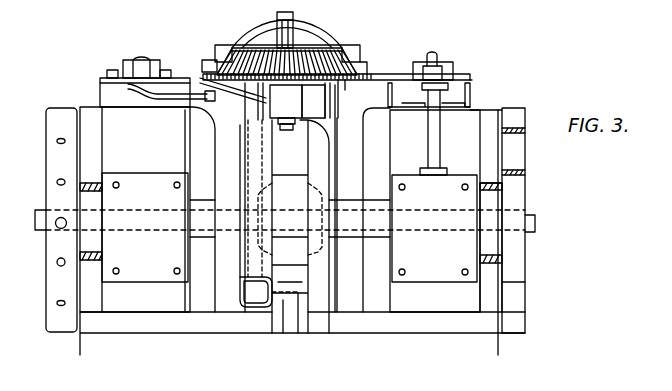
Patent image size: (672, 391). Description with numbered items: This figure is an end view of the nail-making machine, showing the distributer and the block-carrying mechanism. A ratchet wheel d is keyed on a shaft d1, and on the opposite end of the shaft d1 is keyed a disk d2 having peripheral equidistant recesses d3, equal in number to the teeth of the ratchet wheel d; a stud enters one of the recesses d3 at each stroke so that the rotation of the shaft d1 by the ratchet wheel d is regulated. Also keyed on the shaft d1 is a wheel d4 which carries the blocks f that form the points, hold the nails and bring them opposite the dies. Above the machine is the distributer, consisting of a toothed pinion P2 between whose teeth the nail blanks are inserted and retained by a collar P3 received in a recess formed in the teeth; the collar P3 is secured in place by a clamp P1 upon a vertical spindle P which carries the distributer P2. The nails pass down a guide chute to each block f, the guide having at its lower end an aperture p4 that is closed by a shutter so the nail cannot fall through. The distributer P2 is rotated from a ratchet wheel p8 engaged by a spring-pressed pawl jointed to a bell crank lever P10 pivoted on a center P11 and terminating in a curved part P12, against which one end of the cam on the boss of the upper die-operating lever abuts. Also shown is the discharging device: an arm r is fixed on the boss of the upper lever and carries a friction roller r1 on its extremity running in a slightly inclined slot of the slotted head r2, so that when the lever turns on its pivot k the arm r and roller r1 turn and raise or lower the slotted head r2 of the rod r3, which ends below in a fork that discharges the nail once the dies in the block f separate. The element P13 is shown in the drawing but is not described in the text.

The pivot k is at (143, 59).
The vertical spindle P is at (281, 31).
The clamp P1 is at (293, 35).
The toothed pinion P2 is at (341, 76).
The collar P3 is at (323, 48).
The bell crank lever P10 is at (372, 76).
The center P11 is at (443, 64).
The curved part P12 is at (467, 80).
The rod P13 is at (340, 82).
The arm r is at (137, 90).
The friction roller r1 is at (228, 96).
The slotted head r2 is at (220, 100).
The rod r3 is at (287, 340).
The ratchet wheel p8 is at (302, 84).
The aperture p4 is at (323, 88).
The block f is at (278, 226).
The wheel d4 is at (290, 225).
The peripheral recess d3 is at (57, 303).
The disk d2 is at (56, 262).
The shaft d1 is at (528, 221).
The ratchet wheel d is at (518, 278).